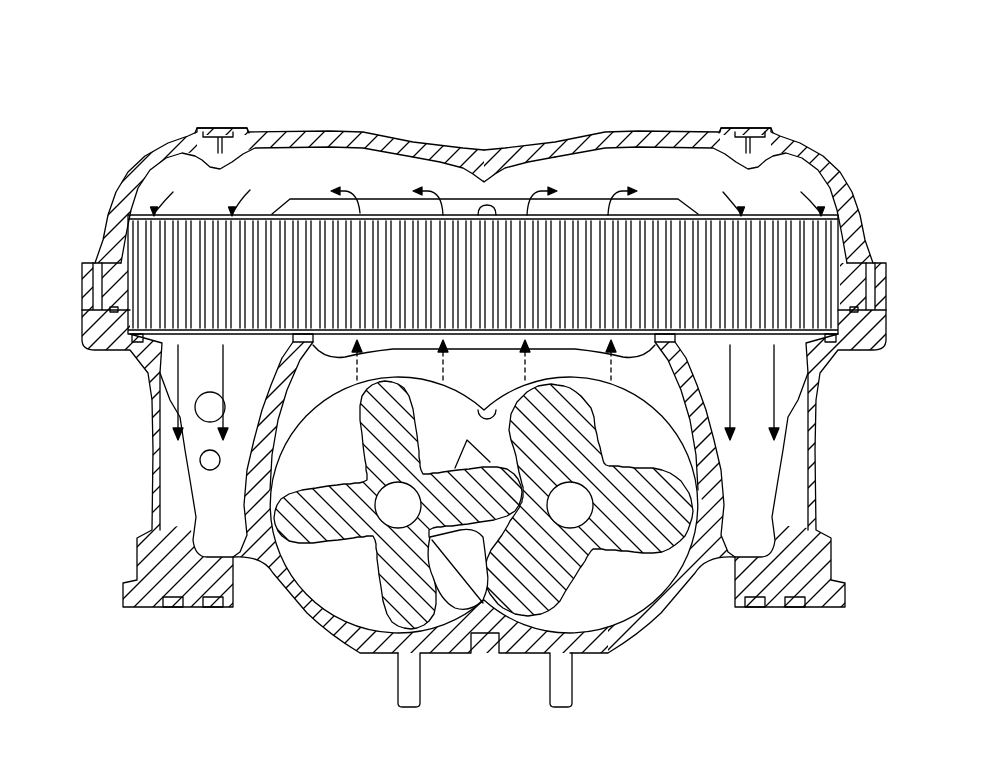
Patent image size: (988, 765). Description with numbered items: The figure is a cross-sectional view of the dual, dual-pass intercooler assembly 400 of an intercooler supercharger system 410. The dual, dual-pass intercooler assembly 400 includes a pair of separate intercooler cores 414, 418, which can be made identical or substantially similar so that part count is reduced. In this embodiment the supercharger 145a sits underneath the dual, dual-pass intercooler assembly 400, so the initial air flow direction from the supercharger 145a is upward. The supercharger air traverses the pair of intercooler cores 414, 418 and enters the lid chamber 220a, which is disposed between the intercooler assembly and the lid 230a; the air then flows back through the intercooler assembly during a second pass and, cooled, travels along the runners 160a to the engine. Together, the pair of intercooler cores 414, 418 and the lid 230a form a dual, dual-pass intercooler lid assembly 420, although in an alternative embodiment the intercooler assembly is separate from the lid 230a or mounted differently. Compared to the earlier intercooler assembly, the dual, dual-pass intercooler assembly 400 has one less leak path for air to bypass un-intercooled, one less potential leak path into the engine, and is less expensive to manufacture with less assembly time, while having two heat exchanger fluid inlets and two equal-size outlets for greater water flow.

The dual, dual-pass intercooler assembly 400 is at (126, 73).
The intercooler supercharger system 410 is at (214, 109).
The intercooler core 414 is at (254, 214).
The intercooler core 418 is at (765, 196).
The dual, dual-pass intercooler lid assembly 420 is at (151, 143).
The lid chamber 220a is at (608, 166).
The lid 230a is at (727, 130).
The runner 160a is at (168, 490).
The supercharger 145a is at (333, 655).